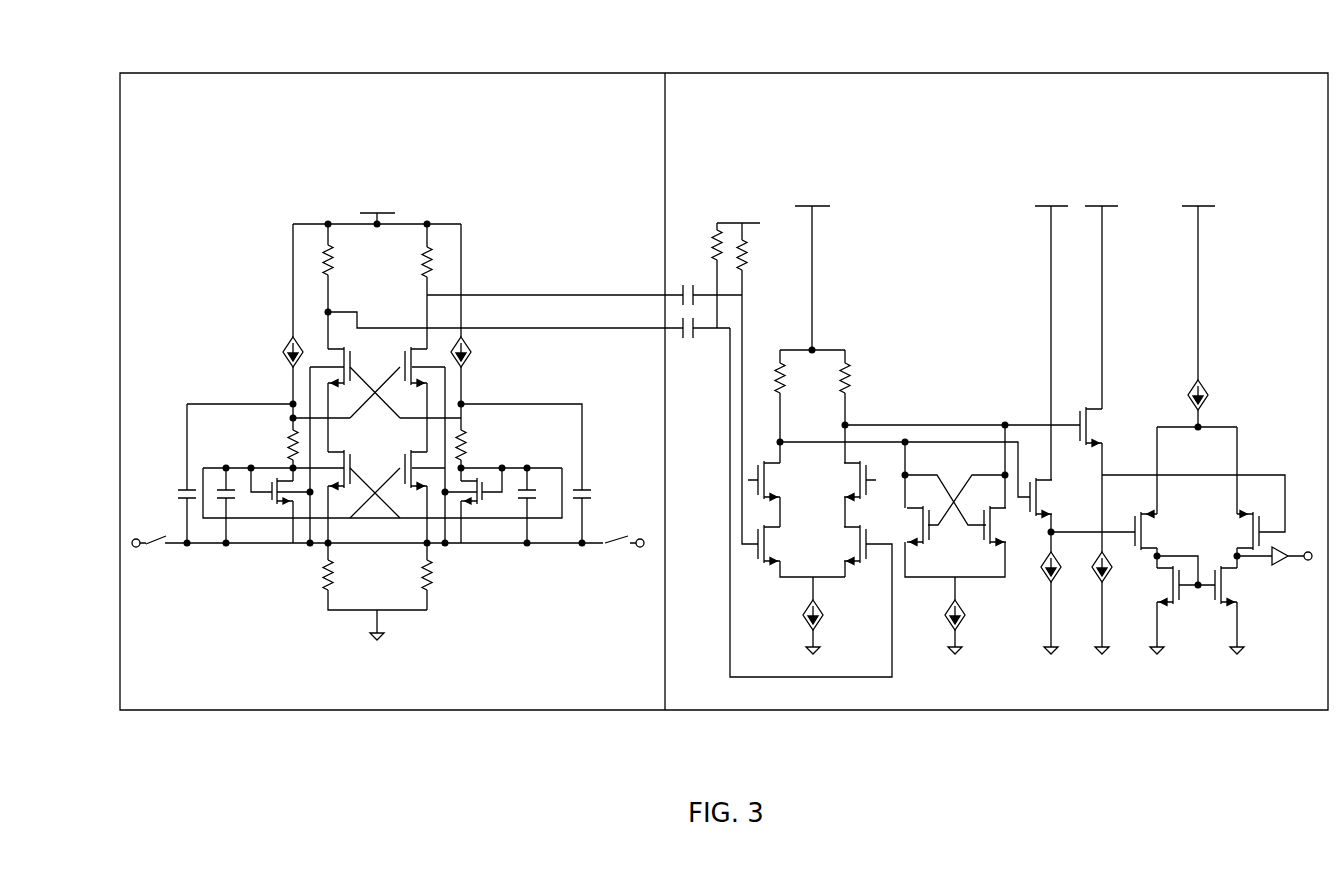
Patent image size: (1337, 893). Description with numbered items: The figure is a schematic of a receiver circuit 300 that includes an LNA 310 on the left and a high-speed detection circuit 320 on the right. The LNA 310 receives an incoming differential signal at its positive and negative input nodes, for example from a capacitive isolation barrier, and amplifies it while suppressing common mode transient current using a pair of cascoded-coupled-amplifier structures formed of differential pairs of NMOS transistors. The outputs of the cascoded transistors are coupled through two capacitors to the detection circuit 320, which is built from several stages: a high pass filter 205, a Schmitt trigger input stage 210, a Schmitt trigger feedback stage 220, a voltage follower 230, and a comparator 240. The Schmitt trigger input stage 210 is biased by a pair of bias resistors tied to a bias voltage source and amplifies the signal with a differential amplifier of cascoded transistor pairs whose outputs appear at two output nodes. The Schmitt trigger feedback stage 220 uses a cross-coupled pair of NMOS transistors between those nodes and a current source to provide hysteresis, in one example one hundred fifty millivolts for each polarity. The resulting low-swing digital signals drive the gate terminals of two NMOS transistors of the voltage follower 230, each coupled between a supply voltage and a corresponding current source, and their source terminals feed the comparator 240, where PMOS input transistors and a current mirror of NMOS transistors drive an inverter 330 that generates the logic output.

The receiver circuit 300 is at (177, 35).
The LNA 310 is at (407, 369).
The high-speed detection circuit 320 is at (1000, 388).
The high pass filter 205 is at (733, 168).
The Schmitt trigger input stage 210 is at (816, 168).
The Schmitt trigger feedback stage 220 is at (961, 334).
The voltage follower 230 is at (1086, 168).
The comparator 240 is at (1248, 250).
The inverter 330 is at (1288, 547).